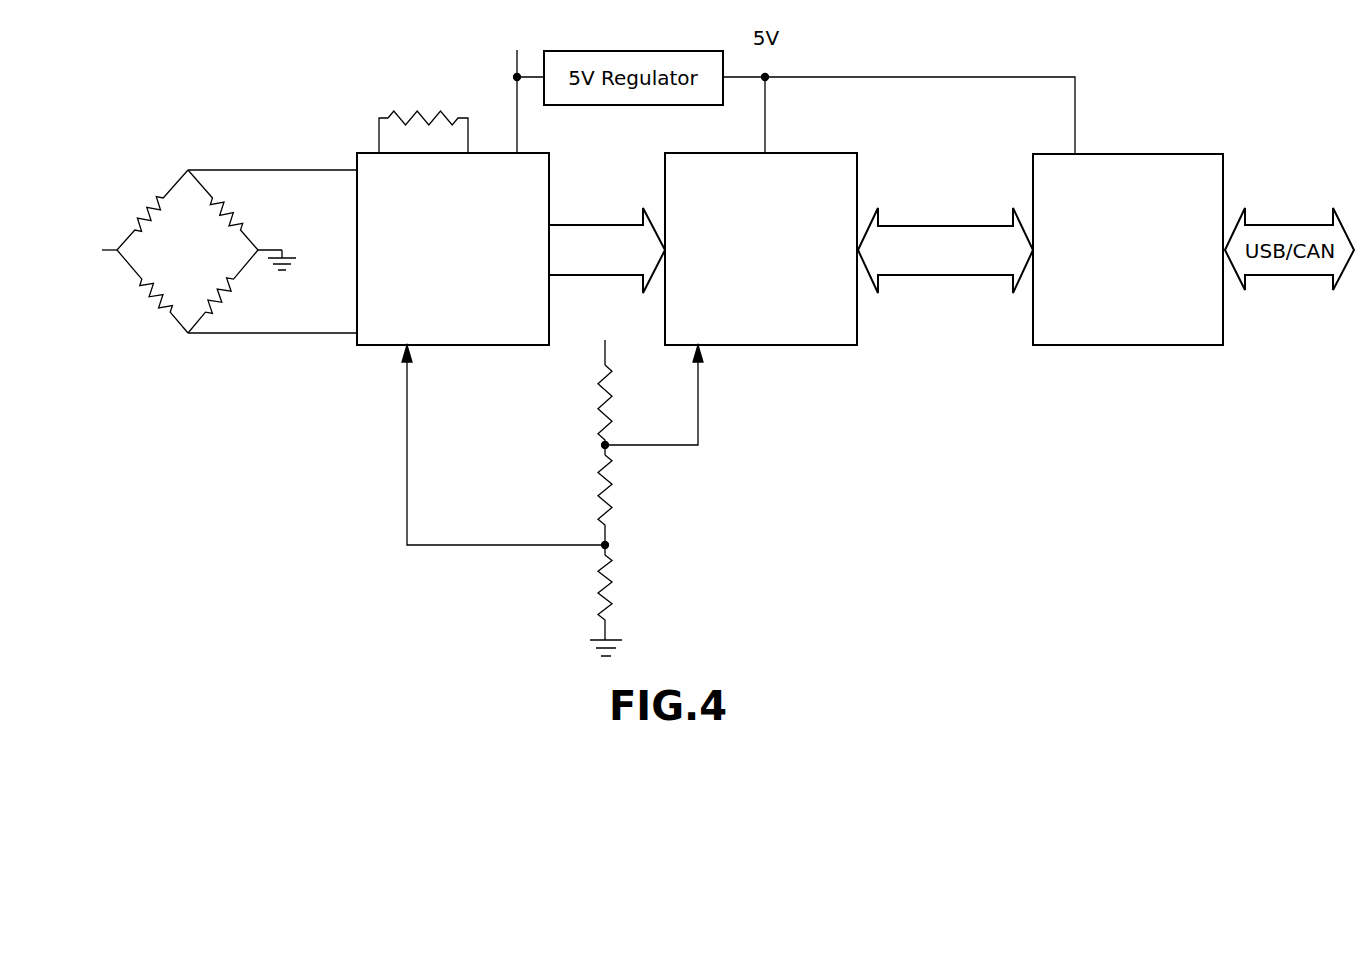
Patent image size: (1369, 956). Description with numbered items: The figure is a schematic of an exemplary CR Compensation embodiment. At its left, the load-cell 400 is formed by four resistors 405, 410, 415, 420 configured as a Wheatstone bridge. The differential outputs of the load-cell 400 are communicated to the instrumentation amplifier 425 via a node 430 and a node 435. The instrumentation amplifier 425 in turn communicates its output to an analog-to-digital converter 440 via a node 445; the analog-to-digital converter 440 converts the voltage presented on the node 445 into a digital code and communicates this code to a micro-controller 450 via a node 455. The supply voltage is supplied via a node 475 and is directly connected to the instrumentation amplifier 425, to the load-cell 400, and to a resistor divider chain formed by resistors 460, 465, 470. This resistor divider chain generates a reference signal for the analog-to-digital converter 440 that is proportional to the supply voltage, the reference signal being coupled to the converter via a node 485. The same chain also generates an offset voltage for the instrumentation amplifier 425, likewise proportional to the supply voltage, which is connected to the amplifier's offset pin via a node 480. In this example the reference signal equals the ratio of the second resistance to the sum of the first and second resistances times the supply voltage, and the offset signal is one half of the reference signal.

The load-cell 400 is at (113, 390).
The resistor 405 is at (148, 198).
The resistor 410 is at (228, 202).
The resistor 415 is at (226, 290).
The resistor 420 is at (155, 293).
The instrumentation amplifier 425 is at (453, 214).
The node 430 is at (288, 167).
The node 435 is at (272, 335).
The analog-to-digital converter 440 is at (761, 249).
The node 445 is at (597, 222).
The micro-controller 450 is at (1128, 249).
The node 455 is at (946, 224).
The resistor 460 is at (590, 408).
The resistor 465 is at (595, 498).
The resistor 470 is at (595, 592).
The node 475 is at (104, 262).
The node 480 is at (405, 475).
The node 485 is at (615, 440).